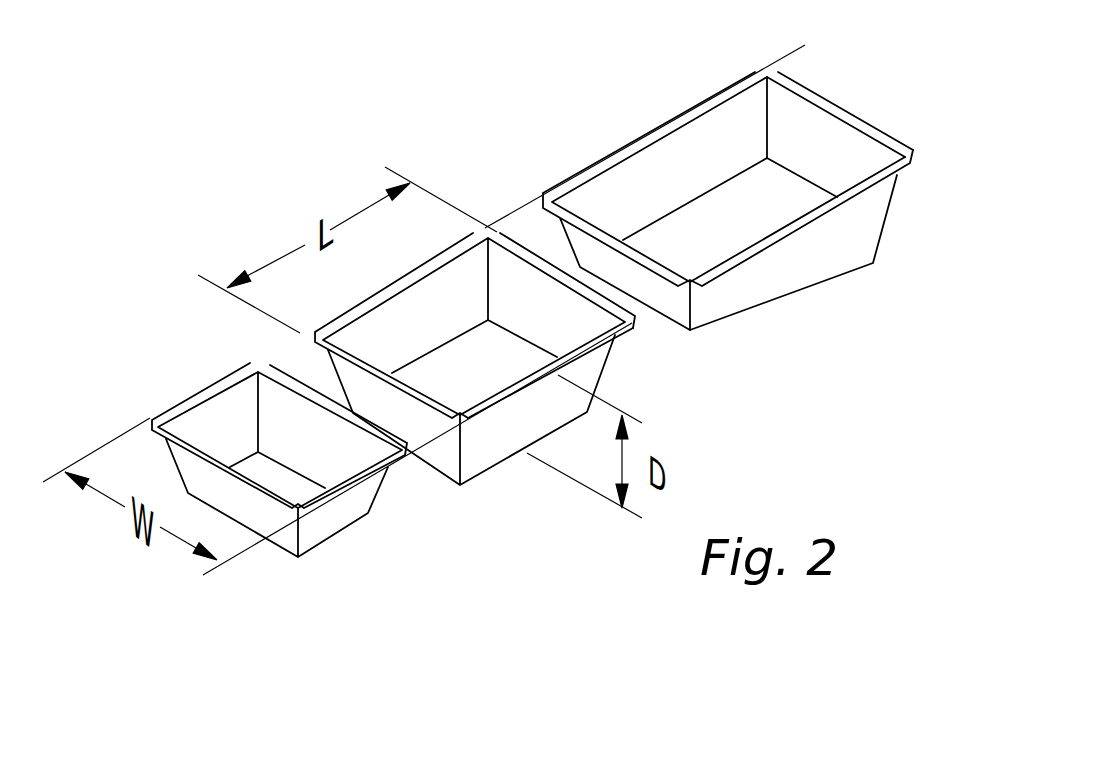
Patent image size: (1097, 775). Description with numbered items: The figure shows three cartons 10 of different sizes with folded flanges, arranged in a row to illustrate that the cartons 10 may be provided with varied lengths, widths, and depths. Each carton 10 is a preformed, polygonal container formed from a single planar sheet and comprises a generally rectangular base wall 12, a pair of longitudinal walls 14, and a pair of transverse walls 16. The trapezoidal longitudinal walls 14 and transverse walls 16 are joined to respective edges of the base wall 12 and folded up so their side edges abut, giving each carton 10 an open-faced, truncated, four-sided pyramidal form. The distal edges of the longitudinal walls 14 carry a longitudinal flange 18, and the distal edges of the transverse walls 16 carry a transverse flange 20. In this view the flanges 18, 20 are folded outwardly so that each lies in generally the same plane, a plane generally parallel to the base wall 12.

The carton 10 is at (768, 287).
The base wall 12 is at (756, 224).
The longitudinal wall 14 is at (842, 206).
The transverse wall 16 is at (822, 108).
The longitudinal flange 18 is at (636, 321).
The transverse flange 20 is at (883, 130).